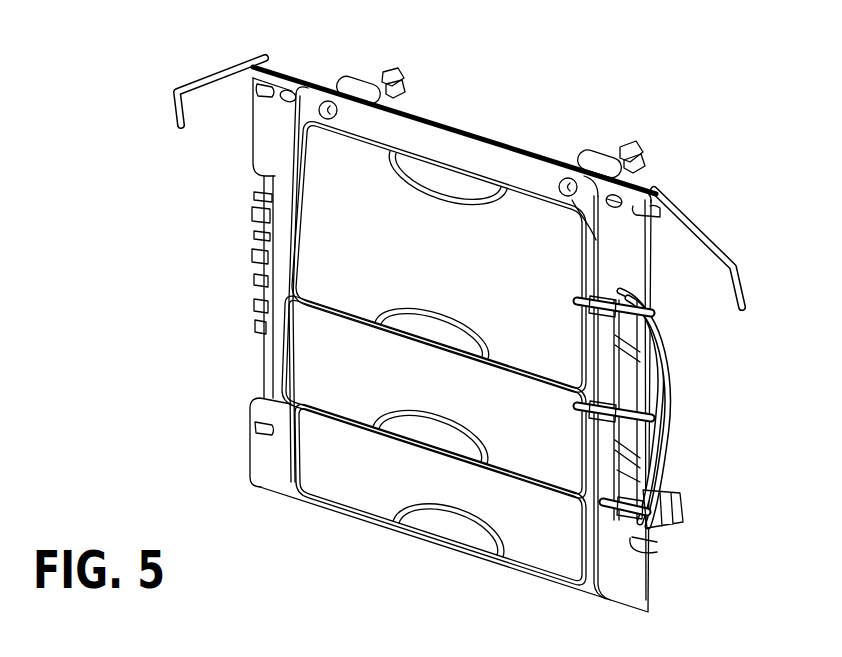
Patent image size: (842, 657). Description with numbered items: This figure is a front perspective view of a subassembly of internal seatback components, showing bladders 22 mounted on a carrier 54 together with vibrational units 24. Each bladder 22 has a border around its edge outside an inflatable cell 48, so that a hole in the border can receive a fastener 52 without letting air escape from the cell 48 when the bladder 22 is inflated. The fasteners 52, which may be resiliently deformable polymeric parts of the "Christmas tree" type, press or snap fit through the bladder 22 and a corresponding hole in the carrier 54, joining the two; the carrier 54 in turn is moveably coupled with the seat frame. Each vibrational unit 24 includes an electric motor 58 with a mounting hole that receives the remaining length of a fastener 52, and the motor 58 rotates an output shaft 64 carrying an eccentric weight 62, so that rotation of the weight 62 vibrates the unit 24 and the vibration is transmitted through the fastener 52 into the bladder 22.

The bladder 22 is at (466, 557).
The vibrational unit 24 is at (338, 82).
The cell 48 is at (354, 262).
The fastener 52 is at (328, 114).
The carrier 54 is at (268, 460).
The electric motor 58 is at (358, 92).
The eccentric weight 62 is at (383, 74).
The output shaft 64 is at (393, 91).